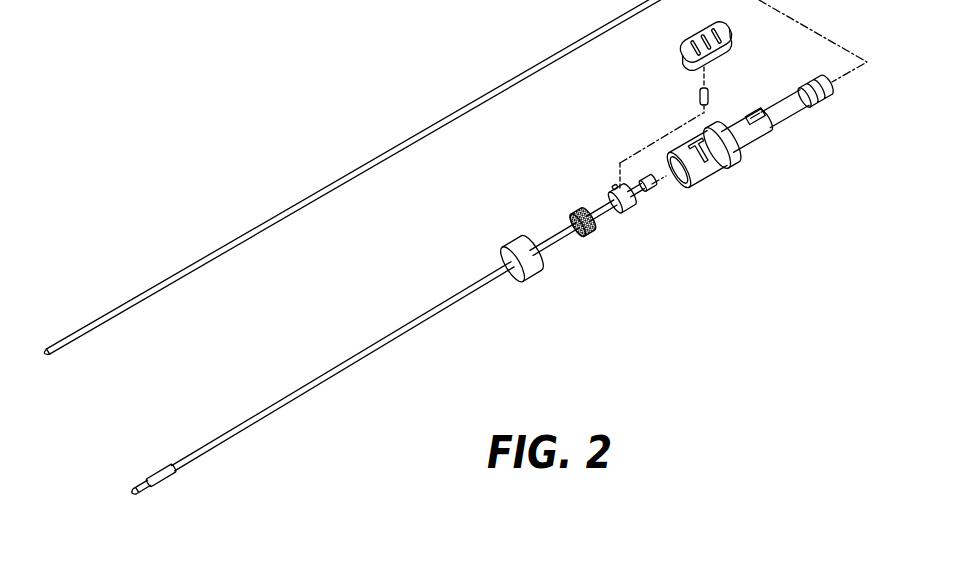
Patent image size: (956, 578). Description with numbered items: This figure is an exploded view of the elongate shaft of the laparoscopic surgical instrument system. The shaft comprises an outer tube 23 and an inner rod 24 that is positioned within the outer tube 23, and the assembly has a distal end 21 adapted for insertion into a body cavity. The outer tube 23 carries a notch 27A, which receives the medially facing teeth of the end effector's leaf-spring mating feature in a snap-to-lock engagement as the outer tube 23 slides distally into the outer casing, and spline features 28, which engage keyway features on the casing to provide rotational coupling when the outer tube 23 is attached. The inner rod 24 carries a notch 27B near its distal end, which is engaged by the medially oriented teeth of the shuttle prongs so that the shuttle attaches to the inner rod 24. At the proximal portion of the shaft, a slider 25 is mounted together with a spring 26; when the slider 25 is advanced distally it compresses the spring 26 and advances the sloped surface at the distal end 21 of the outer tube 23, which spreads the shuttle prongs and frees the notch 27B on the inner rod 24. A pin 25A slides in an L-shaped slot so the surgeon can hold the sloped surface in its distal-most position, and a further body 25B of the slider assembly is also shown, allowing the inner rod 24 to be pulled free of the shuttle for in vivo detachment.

The distal end 21 is at (45, 288).
The outer tube 23 is at (363, 357).
The inner rod 24 is at (363, 167).
The slider 25 is at (682, 47).
The pin 25A is at (713, 93).
The connector body 25B is at (718, 155).
The spring 26 is at (595, 232).
The notch 27A is at (167, 458).
The notch 27B is at (50, 352).
The spline features 28 is at (147, 483).